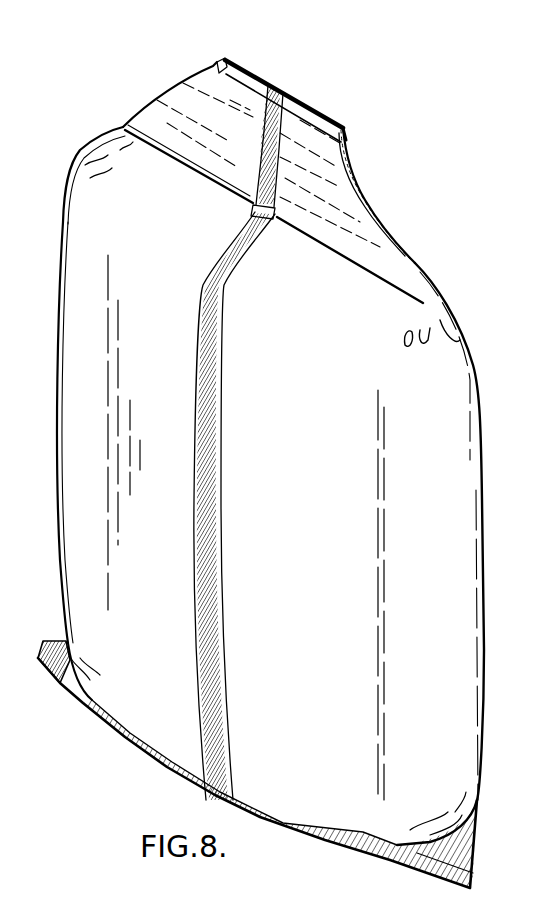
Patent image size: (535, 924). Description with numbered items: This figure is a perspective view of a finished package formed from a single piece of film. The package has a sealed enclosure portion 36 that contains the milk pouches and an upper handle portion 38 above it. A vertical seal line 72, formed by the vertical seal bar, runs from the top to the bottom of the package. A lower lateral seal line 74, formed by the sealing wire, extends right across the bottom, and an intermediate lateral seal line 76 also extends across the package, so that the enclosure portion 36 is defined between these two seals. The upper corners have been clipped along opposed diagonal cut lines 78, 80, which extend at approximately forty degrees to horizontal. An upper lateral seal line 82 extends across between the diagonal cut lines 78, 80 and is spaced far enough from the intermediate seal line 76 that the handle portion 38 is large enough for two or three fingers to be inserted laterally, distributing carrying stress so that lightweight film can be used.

The sealed enclosure portion 36 is at (333, 584).
The upper handle portion 38 is at (243, 77).
The vertical seal line 72 is at (203, 750).
The lower lateral seal line 74 is at (50, 672).
The intermediate lateral seal line 76 is at (157, 143).
The diagonal cut line 78 is at (363, 210).
The diagonal cut line 80 is at (178, 82).
The upper lateral seal line 82 is at (290, 120).